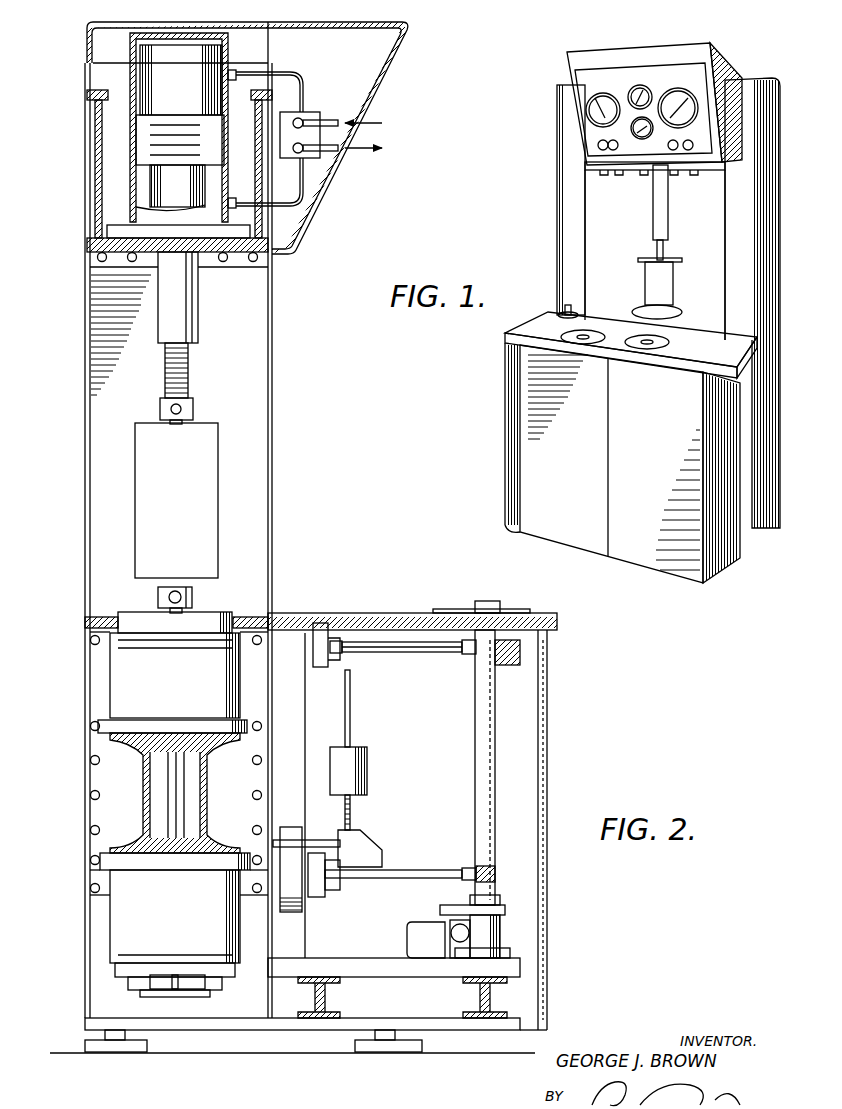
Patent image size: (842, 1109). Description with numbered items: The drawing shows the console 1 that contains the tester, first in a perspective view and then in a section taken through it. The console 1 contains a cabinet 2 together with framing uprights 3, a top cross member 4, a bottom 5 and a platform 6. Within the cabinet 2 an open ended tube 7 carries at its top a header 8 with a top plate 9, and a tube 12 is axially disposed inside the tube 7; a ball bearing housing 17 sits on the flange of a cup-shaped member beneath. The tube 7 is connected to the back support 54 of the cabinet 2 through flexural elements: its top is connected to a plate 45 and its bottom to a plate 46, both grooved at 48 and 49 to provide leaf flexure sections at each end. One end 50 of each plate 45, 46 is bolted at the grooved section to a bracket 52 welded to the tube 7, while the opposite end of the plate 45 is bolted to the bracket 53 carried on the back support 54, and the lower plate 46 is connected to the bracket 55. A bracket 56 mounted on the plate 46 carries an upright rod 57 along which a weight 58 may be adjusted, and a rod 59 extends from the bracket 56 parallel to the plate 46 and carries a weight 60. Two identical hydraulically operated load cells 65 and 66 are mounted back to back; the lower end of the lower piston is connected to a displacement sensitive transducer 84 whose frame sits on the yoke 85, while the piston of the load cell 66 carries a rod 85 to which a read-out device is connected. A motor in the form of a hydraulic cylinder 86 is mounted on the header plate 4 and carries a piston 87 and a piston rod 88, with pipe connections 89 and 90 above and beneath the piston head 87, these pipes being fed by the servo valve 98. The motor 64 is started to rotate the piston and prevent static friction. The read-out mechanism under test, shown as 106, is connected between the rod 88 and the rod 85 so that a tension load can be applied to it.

In FIG. 2, the console 1 is at (549, 708).
In FIG. 1, the console 1 is at (507, 418).
In FIG. 2, the cabinet 2 is at (547, 896).
In FIG. 1, the cabinet 2 is at (740, 555).
In FIG. 2, the framing uprights 3 is at (252, 373).
In FIG. 1, the framing uprights 3 is at (770, 183).
In FIG. 2, the top cross member 4 is at (87, 245).
In FIG. 1, the top cross member 4 is at (730, 62).
In FIG. 2, the bottom 5 is at (296, 1026).
In FIG. 2, the platform 6 is at (340, 614).
In FIG. 1, the platform 6 is at (735, 350).
In FIG. 2, the open ended tube 7 is at (475, 782).
In FIG. 2, the header 8 is at (485, 553).
In FIG. 2, the top plate 9 is at (540, 611).
In FIG. 1, the top plate 9 is at (512, 337).
In FIG. 2, the tube 12 is at (185, 612).
In FIG. 2, the ball bearing housing 17 is at (500, 898).
In FIG. 2, the plate 45 is at (430, 645).
In FIG. 2, the plate 46 is at (425, 872).
In FIG. 2, the groove 48 is at (470, 655).
In FIG. 2, the groove 49 is at (342, 652).
In FIG. 2, the end of plate 50 is at (478, 650).
In FIG. 2, the bracket 52 is at (478, 648).
In FIG. 2, the bracket 53 is at (338, 648).
In FIG. 2, the back support 54 is at (322, 672).
In FIG. 2, the bracket 55 is at (340, 880).
In FIG. 2, the bracket 56 is at (362, 848).
In FIG. 2, the upright rod 57 is at (350, 714).
In FIG. 2, the weight 58 is at (367, 756).
In FIG. 2, the rod 59 is at (350, 832).
In FIG. 2, the weight 60 is at (290, 915).
In FIG. 2, the motor 64 is at (490, 936).
In FIG. 2, the load cell 65 is at (175, 865).
In FIG. 2, the load cell 66 is at (176, 672).
In FIG. 2, the displacement sensitive transducer 84 is at (172, 996).
In FIG. 2, the yoke 85 is at (172, 586).
In FIG. 1, the yoke 85 is at (684, 312).
In FIG. 2, the hydraulic cylinder 86 is at (228, 43).
In FIG. 2, the piston 87 is at (172, 128).
In FIG. 2, the piston rod 88 is at (178, 313).
In FIG. 1, the piston rod 88 is at (665, 212).
In FIG. 2, the pipe connection 89 is at (303, 82).
In FIG. 2, the pipe connection 90 is at (300, 208).
In FIG. 2, the servo valve 98 is at (308, 113).
In FIG. 2, the read out mechanism 106 is at (218, 442).
In FIG. 1, the read out mechanism 106 is at (672, 278).